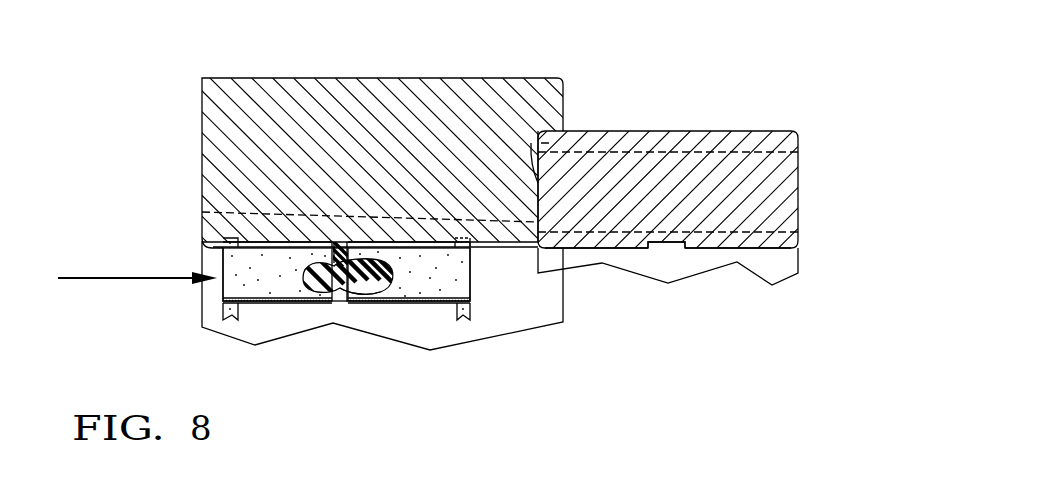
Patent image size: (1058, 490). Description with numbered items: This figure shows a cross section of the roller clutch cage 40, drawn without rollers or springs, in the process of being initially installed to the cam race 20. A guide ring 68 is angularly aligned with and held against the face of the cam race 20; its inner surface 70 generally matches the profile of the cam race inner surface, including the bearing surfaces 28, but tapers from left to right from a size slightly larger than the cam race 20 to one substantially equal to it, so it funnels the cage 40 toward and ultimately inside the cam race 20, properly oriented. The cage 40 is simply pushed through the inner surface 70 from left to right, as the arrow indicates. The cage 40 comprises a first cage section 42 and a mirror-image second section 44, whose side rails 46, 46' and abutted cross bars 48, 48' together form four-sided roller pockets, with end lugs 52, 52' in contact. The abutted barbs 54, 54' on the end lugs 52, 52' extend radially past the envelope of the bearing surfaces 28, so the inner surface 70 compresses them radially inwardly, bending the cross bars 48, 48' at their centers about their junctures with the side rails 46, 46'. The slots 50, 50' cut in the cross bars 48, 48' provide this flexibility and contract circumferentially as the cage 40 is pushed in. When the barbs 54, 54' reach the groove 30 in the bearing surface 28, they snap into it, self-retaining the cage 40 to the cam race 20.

The cam race 20 is at (799, 186).
The bearing surface 28 is at (778, 248).
The groove 30 is at (664, 242).
The roller clutch cage 40 is at (266, 313).
The first cage section 42 is at (296, 313).
The second cage section 44 is at (428, 315).
The side rail 46 is at (217, 343).
The side rail 46' is at (495, 347).
The cross bar 48 is at (233, 249).
The cross bar 48' is at (484, 278).
The slot 50 is at (247, 322).
The slot 50' is at (467, 327).
The end lug 52 is at (347, 311).
The end lug 52' is at (369, 340).
The barb 54 is at (325, 220).
The barb 54' is at (371, 235).
The guide ring 68 is at (290, 97).
The inner surface 70 is at (205, 246).